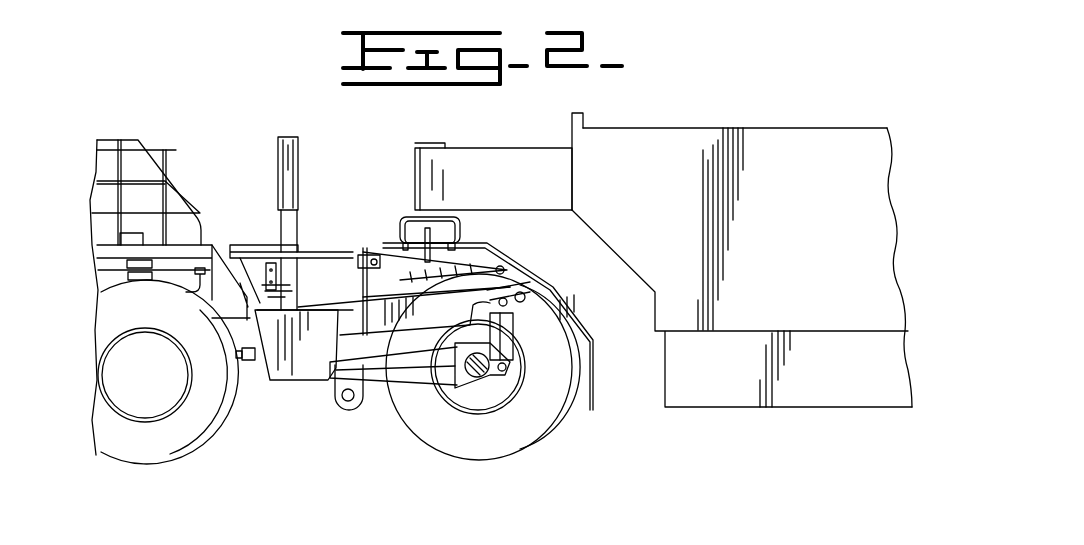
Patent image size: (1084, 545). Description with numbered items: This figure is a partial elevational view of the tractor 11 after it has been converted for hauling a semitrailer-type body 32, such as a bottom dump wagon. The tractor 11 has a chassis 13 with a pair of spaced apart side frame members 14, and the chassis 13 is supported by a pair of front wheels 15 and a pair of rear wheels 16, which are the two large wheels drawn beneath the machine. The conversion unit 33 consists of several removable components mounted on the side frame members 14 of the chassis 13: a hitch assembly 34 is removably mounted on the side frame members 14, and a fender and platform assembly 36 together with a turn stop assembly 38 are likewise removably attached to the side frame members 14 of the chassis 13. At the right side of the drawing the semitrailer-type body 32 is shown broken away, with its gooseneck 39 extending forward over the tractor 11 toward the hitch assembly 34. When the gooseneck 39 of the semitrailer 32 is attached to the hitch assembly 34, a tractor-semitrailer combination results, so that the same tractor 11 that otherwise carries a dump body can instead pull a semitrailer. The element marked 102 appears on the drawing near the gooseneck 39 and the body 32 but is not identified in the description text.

The tractor 11 is at (91, 188).
The chassis 13 is at (255, 356).
The side frame members 14 is at (380, 318).
The front wheels 15 is at (147, 447).
The rear wheels 16 is at (466, 437).
The semitrailer-type body 32 is at (658, 157).
The conversion unit 33 is at (342, 180).
The hitch assembly 34 is at (412, 205).
The fender and platform assembly 36 is at (390, 239).
The turn stop assembly 38 is at (272, 208).
The gooseneck 39 is at (505, 178).
The flange 102 is at (567, 135).